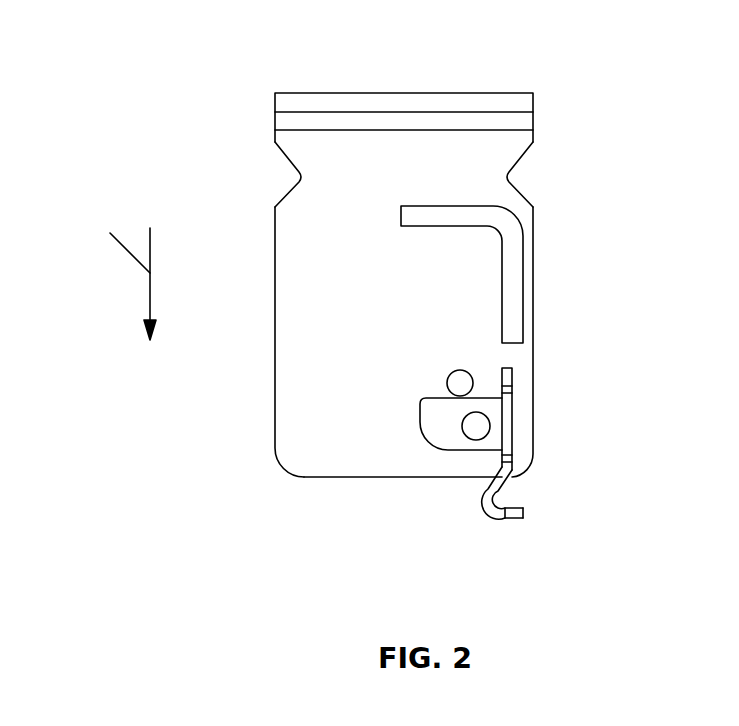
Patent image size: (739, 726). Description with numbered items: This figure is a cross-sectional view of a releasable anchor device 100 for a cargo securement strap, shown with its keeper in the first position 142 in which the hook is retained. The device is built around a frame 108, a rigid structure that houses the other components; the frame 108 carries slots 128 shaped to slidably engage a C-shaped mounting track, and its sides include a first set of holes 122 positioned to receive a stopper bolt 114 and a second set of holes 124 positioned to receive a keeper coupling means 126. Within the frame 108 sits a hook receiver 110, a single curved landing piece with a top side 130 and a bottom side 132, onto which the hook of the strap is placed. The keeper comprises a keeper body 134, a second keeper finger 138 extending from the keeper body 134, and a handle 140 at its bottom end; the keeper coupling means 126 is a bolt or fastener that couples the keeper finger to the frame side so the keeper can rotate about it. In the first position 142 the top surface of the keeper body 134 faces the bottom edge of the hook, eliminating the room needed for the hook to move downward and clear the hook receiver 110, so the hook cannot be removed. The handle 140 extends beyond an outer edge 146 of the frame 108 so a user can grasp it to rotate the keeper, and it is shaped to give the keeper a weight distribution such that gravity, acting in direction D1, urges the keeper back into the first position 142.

The releasable anchor device 100 is at (222, 75).
The direction D1 is at (110, 276).
The frame 108 is at (283, 406).
The hook receiver 110 is at (510, 312).
The stopper bolt 114 is at (460, 383).
The first set of holes 122 is at (449, 379).
The second set of holes 124 is at (463, 426).
The keeper coupling means 126 is at (476, 426).
The slots 128 is at (297, 168).
The top side 130 is at (442, 206).
The bottom side 132 is at (413, 228).
The keeper body 134 is at (513, 378).
The second keeper finger 138 is at (420, 425).
The handle 140 is at (523, 508).
The first position 142 is at (463, 527).
The outer edge 146 is at (336, 478).